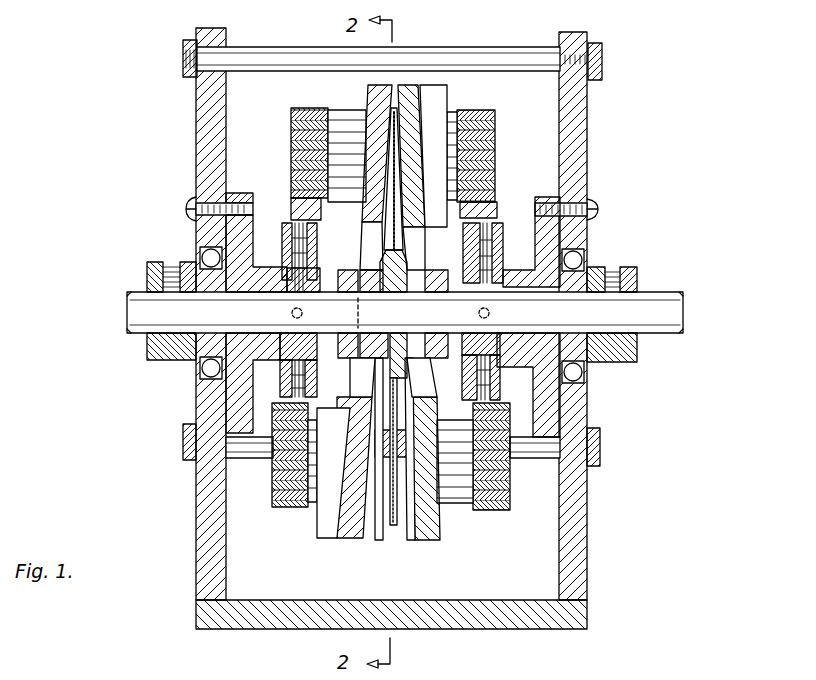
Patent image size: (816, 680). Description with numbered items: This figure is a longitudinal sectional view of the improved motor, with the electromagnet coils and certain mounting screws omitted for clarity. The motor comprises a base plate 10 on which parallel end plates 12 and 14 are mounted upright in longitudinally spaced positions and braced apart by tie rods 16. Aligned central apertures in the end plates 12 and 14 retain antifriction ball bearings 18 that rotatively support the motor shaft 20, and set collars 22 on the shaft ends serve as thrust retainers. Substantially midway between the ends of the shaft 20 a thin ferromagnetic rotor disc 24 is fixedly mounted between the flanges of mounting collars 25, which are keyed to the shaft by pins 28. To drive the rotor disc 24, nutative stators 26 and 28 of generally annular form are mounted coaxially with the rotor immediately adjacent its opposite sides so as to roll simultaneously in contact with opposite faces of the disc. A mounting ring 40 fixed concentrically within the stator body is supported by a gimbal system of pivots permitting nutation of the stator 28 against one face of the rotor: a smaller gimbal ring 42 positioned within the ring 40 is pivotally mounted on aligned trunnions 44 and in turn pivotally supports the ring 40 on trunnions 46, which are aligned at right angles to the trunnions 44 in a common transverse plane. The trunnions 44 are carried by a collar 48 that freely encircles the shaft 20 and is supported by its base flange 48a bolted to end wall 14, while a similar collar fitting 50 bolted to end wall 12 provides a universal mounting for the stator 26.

The base plate 10 is at (578, 614).
The end plate 12 is at (583, 492).
The end plate 14 is at (200, 491).
The tie rods 16 is at (290, 60).
The antifriction ball bearings 18 is at (200, 232).
The motor shaft 20 is at (668, 296).
The set collars 22 is at (158, 268).
The rotor disc 24 is at (393, 545).
The mounting collars 25 is at (338, 276).
The nutative stator 26 is at (490, 98).
The nutative stator 28 is at (338, 88).
The mounting ring 40 is at (321, 212).
The gimbal ring 42 is at (272, 227).
The trunnions 44 is at (297, 260).
The trunnions 46 is at (290, 313).
The collar 48 is at (256, 212).
The base flange 48a is at (229, 200).
The collar fitting 50 is at (519, 268).